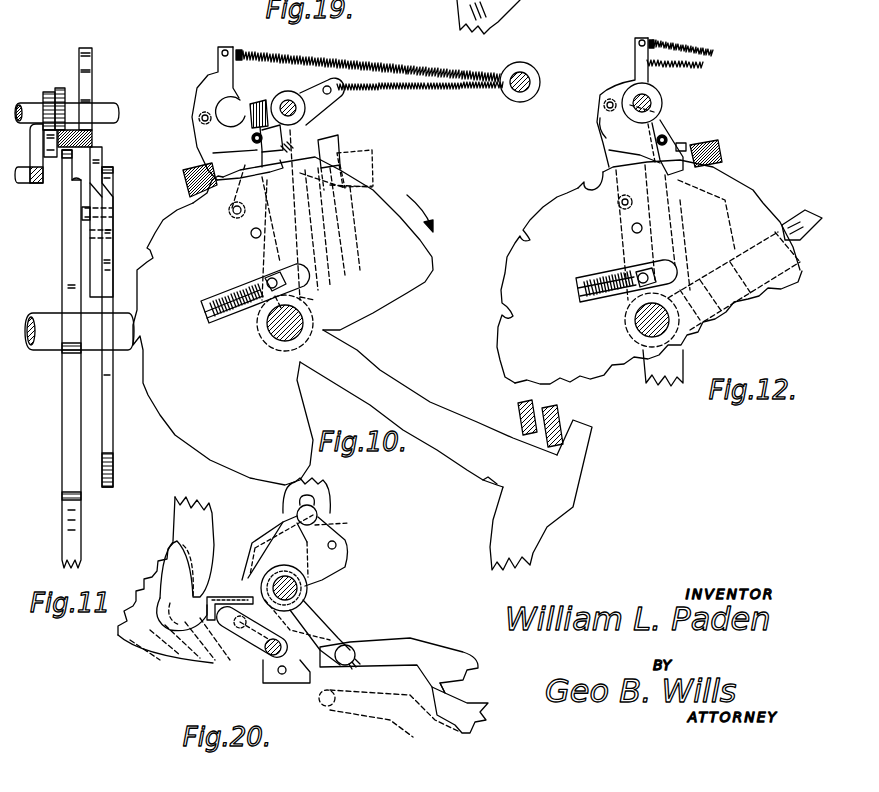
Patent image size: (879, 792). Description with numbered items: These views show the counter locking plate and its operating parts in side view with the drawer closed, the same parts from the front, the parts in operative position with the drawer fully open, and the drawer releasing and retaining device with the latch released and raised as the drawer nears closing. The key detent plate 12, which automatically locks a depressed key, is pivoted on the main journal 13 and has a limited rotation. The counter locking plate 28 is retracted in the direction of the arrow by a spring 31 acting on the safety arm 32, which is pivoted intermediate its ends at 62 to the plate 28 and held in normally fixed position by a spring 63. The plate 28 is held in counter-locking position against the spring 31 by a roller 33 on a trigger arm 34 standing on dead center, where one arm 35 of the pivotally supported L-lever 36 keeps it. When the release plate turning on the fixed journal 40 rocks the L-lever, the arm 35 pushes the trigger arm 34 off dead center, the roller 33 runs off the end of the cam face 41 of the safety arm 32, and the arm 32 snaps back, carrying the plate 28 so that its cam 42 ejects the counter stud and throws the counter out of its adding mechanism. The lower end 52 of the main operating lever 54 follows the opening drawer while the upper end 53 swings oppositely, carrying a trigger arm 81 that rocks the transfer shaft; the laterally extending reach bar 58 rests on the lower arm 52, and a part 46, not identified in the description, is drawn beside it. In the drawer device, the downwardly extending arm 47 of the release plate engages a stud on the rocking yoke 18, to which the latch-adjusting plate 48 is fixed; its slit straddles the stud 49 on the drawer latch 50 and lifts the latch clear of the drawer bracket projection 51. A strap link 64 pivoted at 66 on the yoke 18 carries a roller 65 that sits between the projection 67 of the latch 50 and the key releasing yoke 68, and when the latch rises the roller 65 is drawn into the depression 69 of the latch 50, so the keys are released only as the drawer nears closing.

In FIG. 20, the key detent plate 12 is at (185, 564).
In FIG. 10, the main journal 13 is at (300, 325).
In FIG. 20, the rocking yoke 18 is at (113, 652).
In FIG. 11, the counter locking plate 28 is at (115, 448).
In FIG. 10, the counter locking plate 28 is at (283, 321).
In FIG. 12, the counter locking plate 28 is at (649, 272).
In FIG. 10, the spring 31 is at (340, 62).
In FIG. 12, the spring 31 is at (694, 45).
In FIG. 11, the safety arm 32 is at (85, 90).
In FIG. 10, the safety arm 32 is at (203, 92).
In FIG. 12, the safety arm 32 is at (612, 87).
In FIG. 11, the roller 33 is at (78, 145).
In FIG. 10, the roller 33 is at (250, 123).
In FIG. 12, the roller 33 is at (667, 139).
In FIG. 11, the trigger arm 34 is at (50, 158).
In FIG. 10, the trigger arm 34 is at (280, 91).
In FIG. 12, the trigger arm 34 is at (678, 133).
In FIG. 11, the arm of L-lever 35 is at (45, 117).
In FIG. 10, the arm of L-lever 35 is at (250, 108).
In FIG. 12, the arm of L-lever 35 is at (606, 128).
In FIG. 11, the L-lever 36 is at (35, 185).
In FIG. 10, the L-lever 36 is at (297, 138).
In FIG. 12, the L-lever 36 is at (686, 145).
In FIG. 11, the fixed journal 40 is at (97, 108).
In FIG. 10, the fixed journal 40 is at (296, 116).
In FIG. 12, the fixed journal 40 is at (651, 102).
In FIG. 10, the cam face 41 is at (253, 148).
In FIG. 12, the cam face 41 is at (653, 143).
In FIG. 10, the cam 42 is at (193, 205).
In FIG. 12, the cam 42 is at (590, 182).
In FIG. 10, the lug 46 is at (521, 420).
In FIG. 20, the downwardly extending arm 47 is at (330, 497).
In FIG. 20, the latch-adjusting plate 48 is at (318, 633).
In FIG. 20, the stud 49 is at (352, 650).
In FIG. 20, the drawer latch 50 is at (418, 648).
In FIG. 20, the drawer bracket projection 51 is at (452, 707).
In FIG. 10, the lower end of main operating lever 52 is at (541, 495).
In FIG. 10, the upper end of main operating lever 53 is at (198, 177).
In FIG. 12, the upper end of main operating lever 53 is at (722, 155).
In FIG. 11, the main operating lever 54 is at (72, 378).
In FIG. 10, the main operating lever 54 is at (372, 373).
In FIG. 12, the main operating lever 54 is at (668, 367).
In FIG. 10, the reach bar 58 is at (571, 417).
In FIG. 11, the pivot 62 is at (113, 237).
In FIG. 10, the pivot 62 is at (251, 235).
In FIG. 12, the pivot 62 is at (631, 227).
In FIG. 10, the spring 63 is at (226, 297).
In FIG. 12, the spring 63 is at (599, 280).
In FIG. 20, the strap link 64 is at (243, 647).
In FIG. 20, the roller 65 is at (167, 656).
In FIG. 20, the pivot 66 is at (274, 656).
In FIG. 20, the projection 67 is at (210, 643).
In FIG. 20, the key releasing yoke 68 is at (222, 597).
In FIG. 20, the depression 69 is at (268, 655).
In FIG. 12, the trigger arm 81 is at (803, 220).